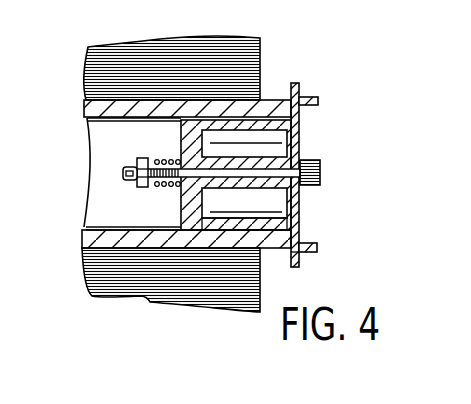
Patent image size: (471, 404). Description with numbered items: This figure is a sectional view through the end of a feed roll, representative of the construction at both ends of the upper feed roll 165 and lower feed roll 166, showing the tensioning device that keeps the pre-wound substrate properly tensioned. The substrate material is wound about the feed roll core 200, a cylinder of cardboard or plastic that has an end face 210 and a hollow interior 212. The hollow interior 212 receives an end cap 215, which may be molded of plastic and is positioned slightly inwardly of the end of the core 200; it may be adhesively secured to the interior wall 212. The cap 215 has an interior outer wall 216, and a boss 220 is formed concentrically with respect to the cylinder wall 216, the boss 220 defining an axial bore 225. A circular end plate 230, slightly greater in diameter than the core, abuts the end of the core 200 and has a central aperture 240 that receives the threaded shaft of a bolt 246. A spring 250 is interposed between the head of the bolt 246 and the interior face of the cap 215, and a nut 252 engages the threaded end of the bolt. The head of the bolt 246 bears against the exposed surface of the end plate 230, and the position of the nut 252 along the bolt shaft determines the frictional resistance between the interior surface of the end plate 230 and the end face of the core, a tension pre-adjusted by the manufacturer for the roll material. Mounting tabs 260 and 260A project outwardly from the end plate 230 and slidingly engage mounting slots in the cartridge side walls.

The upper feed roll 165 is at (260, 50).
The lower feed roll 166 is at (171, 280).
The feed roll core 200 is at (270, 108).
The end face 210 is at (300, 93).
The hollow interior 212 is at (88, 167).
The end cap 215 is at (300, 134).
The interior outer wall 216 is at (300, 122).
The boss 220 is at (300, 146).
The axial bore 225 is at (270, 186).
The end plate 230 is at (302, 235).
The central aperture 240 is at (300, 198).
The bolt 246 is at (320, 181).
The spring 250 is at (160, 188).
The nut 252 is at (143, 158).
The mounting tab 260 is at (318, 103).
The mounting tab 260A is at (303, 253).